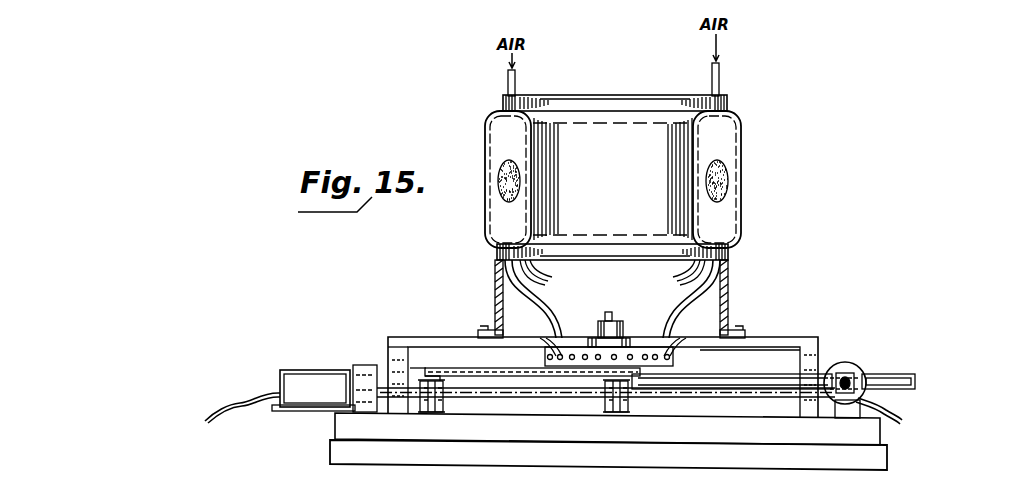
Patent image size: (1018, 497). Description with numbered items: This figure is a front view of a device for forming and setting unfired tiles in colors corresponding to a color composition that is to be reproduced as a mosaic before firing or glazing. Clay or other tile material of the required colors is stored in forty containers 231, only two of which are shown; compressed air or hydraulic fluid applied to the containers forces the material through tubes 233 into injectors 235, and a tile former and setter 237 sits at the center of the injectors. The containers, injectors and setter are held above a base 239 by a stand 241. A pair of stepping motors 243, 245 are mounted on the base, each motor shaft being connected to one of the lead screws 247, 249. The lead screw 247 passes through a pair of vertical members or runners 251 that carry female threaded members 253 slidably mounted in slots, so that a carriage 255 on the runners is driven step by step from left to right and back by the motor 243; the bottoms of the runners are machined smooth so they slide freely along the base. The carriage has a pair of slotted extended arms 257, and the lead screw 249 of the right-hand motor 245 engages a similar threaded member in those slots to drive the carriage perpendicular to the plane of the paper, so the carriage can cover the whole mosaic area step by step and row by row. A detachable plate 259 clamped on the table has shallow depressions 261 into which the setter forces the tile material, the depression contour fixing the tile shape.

The containers 231 is at (486, 124).
The tubes 233 is at (680, 266).
The injectors 235 is at (548, 354).
The tile former and setter 237 is at (608, 313).
The base 239 is at (886, 441).
The stand 241 is at (791, 338).
The stepping motor 243 is at (305, 369).
The stepping motor 245 is at (845, 362).
The lead screw 247 is at (546, 398).
The lead screw 249 is at (866, 370).
The vertical members or runners 251 is at (421, 410).
The female threaded members 253 is at (442, 410).
The carriage 255 is at (416, 368).
The extended arms 257 is at (762, 371).
The detachable plate 259 is at (432, 366).
The shallow depressions 261 is at (476, 365).